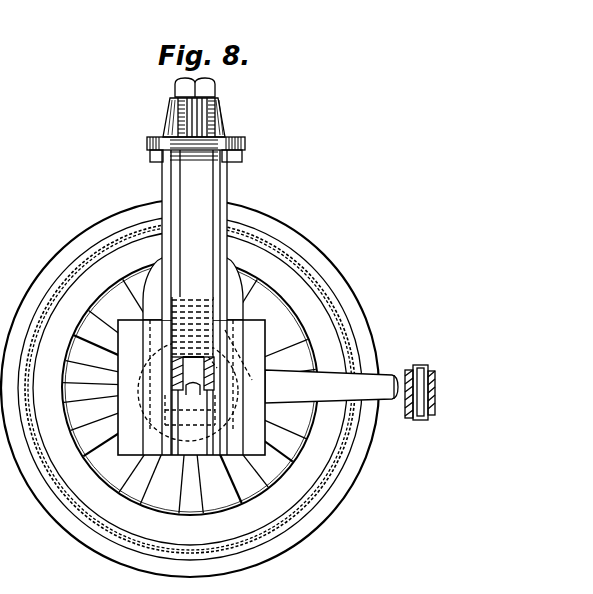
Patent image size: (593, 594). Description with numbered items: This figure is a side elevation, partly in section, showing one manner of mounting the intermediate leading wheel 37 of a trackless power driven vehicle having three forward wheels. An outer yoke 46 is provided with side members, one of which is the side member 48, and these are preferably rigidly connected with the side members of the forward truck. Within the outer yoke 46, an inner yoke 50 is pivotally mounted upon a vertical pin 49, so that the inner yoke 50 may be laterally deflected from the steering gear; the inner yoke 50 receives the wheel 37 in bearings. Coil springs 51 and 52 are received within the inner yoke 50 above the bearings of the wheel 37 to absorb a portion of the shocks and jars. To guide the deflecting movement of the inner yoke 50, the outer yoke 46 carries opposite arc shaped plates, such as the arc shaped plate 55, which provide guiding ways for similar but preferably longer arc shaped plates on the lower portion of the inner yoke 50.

The wheel 37 is at (48, 496).
The yoke 46 is at (210, 193).
The side member 48 is at (198, 373).
The vertical pin 49 is at (175, 117).
The inner yoke 50 is at (163, 173).
The coil spring 51 is at (160, 295).
The coil spring 52 is at (66, 357).
The arc shaped plate 55 is at (143, 417).